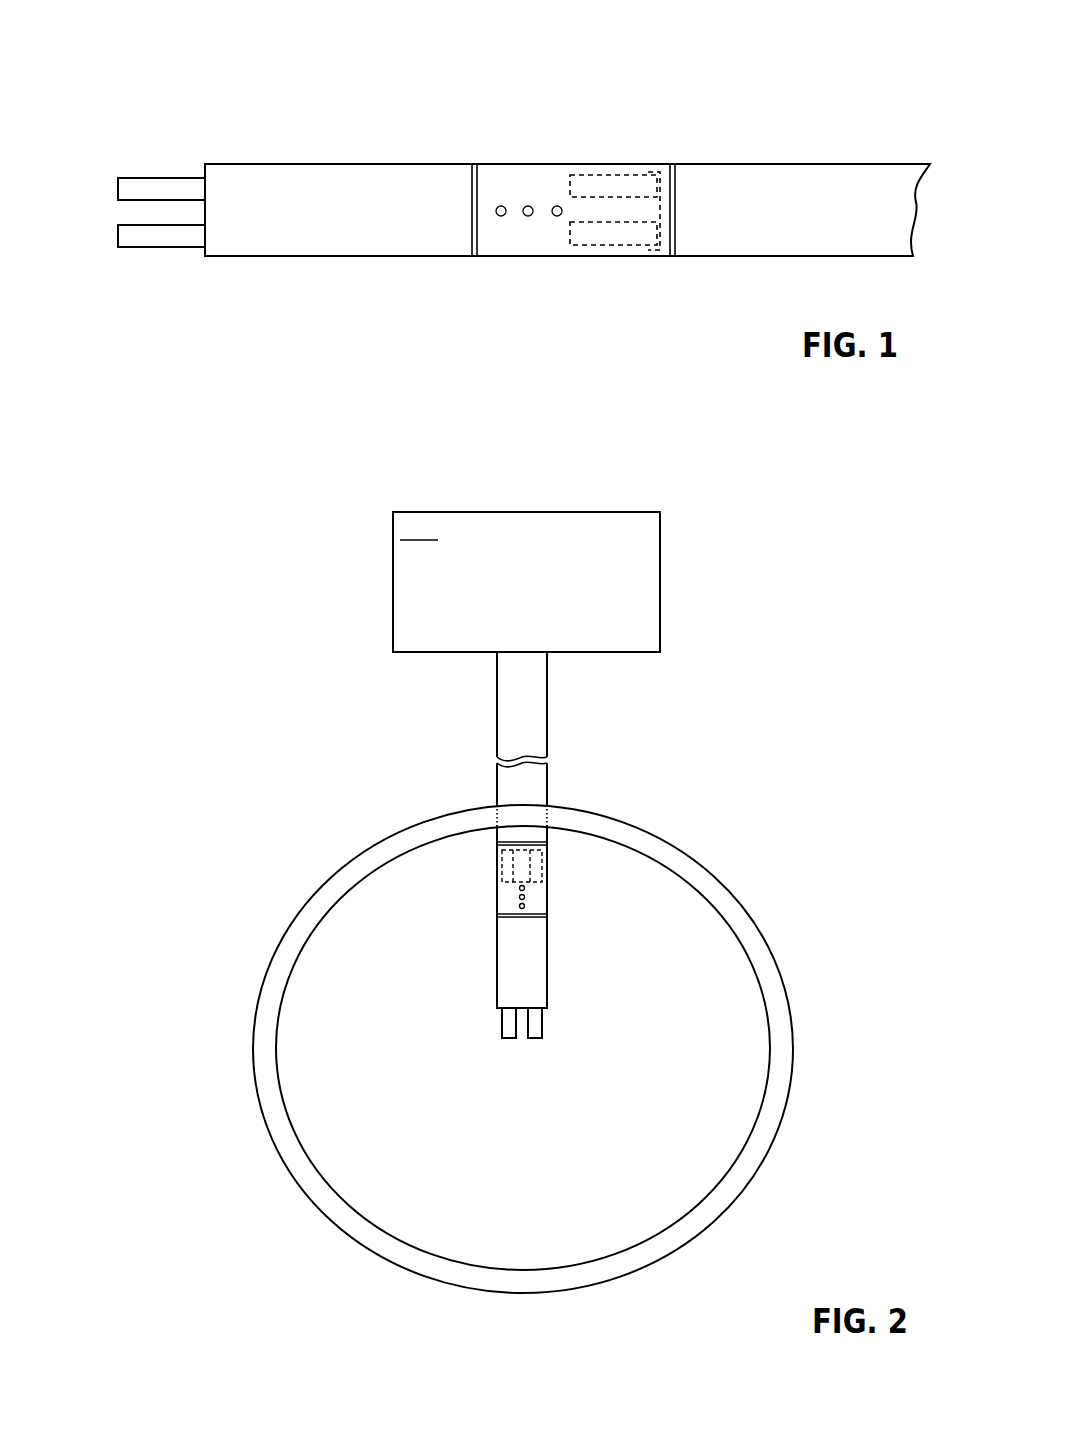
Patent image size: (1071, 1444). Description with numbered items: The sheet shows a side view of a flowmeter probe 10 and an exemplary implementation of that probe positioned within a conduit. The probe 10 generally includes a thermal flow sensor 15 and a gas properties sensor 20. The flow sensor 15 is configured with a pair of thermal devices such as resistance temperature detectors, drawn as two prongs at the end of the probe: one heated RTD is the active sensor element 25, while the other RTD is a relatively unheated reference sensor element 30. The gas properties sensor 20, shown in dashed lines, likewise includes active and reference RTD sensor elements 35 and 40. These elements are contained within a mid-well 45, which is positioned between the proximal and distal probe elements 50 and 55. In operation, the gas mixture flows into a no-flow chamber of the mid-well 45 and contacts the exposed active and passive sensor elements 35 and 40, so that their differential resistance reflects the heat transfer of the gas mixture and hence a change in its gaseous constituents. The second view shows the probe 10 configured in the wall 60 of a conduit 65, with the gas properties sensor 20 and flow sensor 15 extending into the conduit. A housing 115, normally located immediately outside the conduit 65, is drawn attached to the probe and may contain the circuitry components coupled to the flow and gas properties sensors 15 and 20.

In FIG. 1, the probe 10 is at (484, 168).
In FIG. 2, the probe 10 is at (502, 845).
In FIG. 1, the thermal flow sensor 15 is at (122, 213).
In FIG. 2, the thermal flow sensor 15 is at (557, 1033).
In FIG. 1, the gas properties sensor 20 is at (577, 209).
In FIG. 2, the gas properties sensor 20 is at (562, 866).
In FIG. 1, the active sensor element 25 is at (148, 178).
In FIG. 1, the reference sensor element 30 is at (138, 248).
In FIG. 1, the active RTD sensor element 35 is at (605, 175).
In FIG. 1, the reference RTD sensor element 40 is at (598, 245).
In FIG. 1, the mid-well 45 is at (573, 209).
In FIG. 1, the proximal probe element 50 is at (777, 165).
In FIG. 1, the distal probe element 55 is at (323, 165).
In FIG. 2, the wall 60 is at (693, 832).
In FIG. 2, the conduit 65 is at (764, 892).
In FIG. 2, the housing 115 is at (526, 582).